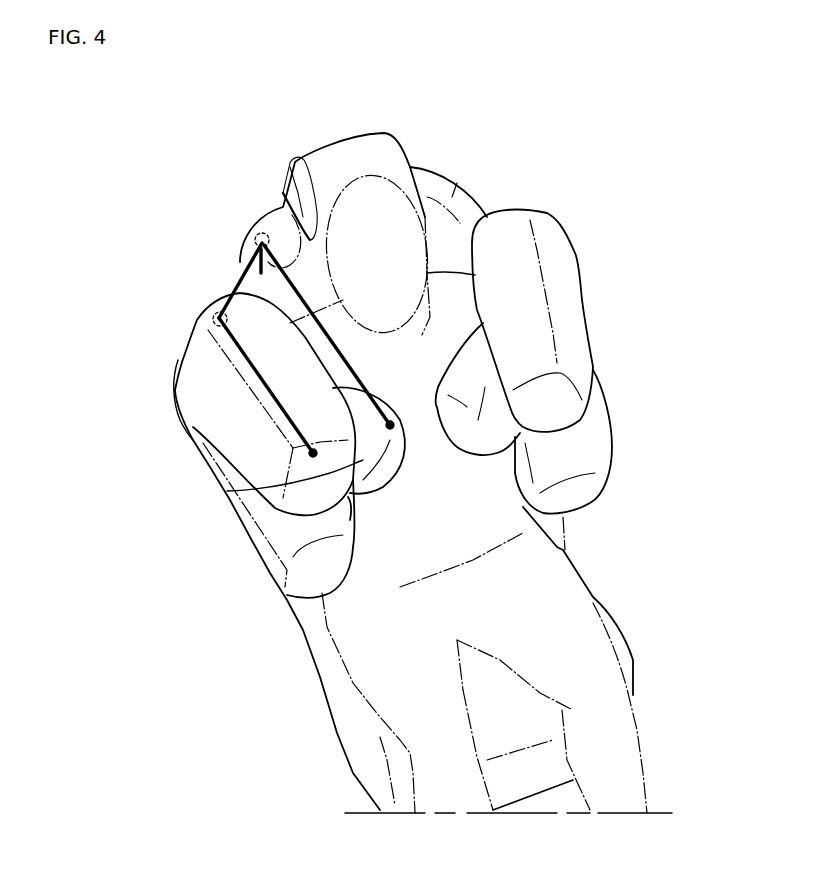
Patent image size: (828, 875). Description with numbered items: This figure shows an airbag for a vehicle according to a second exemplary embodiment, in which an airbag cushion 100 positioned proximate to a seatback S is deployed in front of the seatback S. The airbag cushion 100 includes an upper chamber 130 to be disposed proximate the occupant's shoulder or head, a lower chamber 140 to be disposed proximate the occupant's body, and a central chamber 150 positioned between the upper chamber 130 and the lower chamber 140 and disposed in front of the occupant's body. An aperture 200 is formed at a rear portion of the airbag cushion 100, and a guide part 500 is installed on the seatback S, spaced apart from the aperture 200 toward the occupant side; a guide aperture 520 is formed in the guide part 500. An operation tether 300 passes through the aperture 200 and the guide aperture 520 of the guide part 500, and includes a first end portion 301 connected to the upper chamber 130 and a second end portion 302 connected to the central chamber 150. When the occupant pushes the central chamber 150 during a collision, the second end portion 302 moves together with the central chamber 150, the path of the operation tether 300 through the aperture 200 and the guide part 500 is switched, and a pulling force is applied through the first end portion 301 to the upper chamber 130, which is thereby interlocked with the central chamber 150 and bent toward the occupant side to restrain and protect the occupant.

The seatback S is at (453, 195).
The airbag cushion 100 is at (175, 395).
The upper chamber 130 is at (213, 407).
The lower chamber 140 is at (250, 528).
The central chamber 150 is at (227, 491).
The aperture 200 is at (208, 315).
The operation tether 300 is at (243, 273).
The first end portion 301 is at (220, 350).
The second end portion 302 is at (353, 363).
The guide part 500 is at (284, 190).
The guide aperture 520 is at (261, 232).